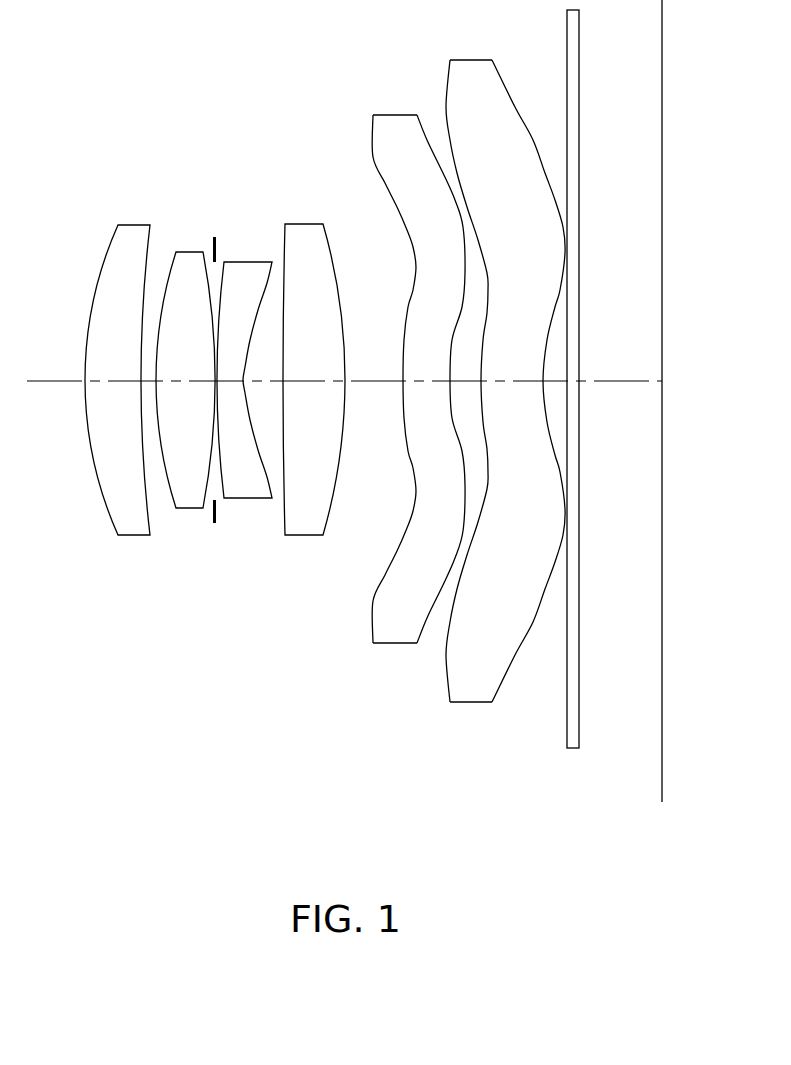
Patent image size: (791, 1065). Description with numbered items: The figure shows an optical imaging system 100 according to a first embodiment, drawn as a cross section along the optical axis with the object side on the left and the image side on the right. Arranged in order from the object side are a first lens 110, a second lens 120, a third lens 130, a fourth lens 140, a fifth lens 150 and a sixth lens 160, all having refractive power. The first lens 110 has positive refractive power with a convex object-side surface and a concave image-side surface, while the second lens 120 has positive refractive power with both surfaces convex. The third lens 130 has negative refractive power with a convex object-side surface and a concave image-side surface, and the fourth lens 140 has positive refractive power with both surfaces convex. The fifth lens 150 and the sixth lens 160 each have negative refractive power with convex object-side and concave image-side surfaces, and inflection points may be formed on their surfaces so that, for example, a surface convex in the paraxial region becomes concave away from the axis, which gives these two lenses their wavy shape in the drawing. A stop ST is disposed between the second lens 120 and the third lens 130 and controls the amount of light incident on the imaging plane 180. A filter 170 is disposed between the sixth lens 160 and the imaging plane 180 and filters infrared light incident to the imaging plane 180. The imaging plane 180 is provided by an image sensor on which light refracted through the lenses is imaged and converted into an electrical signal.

The optical imaging system 100 is at (304, 118).
The stop ST is at (216, 245).
The first lens 110 is at (135, 536).
The second lens 120 is at (185, 509).
The third lens 130 is at (238, 499).
The fourth lens 140 is at (300, 536).
The fifth lens 150 is at (393, 644).
The sixth lens 160 is at (470, 703).
The filter 170 is at (568, 749).
The imaging plane 180 is at (662, 785).